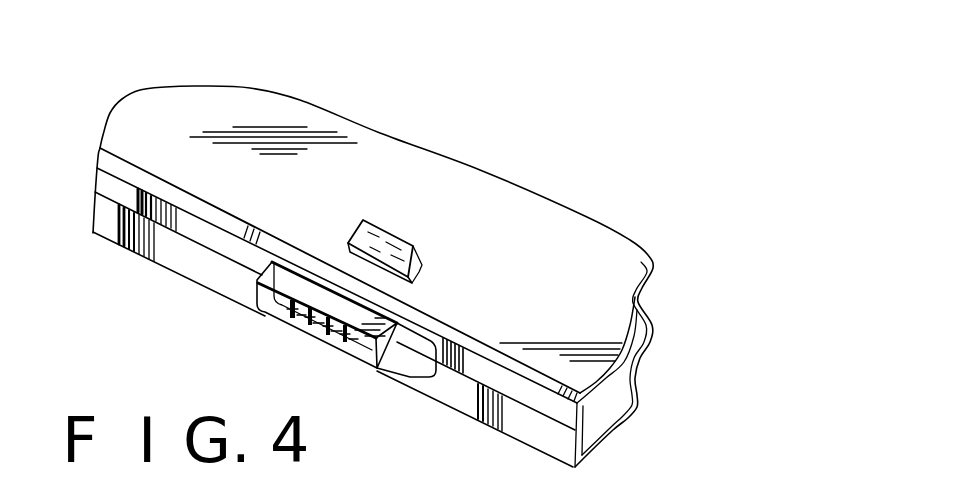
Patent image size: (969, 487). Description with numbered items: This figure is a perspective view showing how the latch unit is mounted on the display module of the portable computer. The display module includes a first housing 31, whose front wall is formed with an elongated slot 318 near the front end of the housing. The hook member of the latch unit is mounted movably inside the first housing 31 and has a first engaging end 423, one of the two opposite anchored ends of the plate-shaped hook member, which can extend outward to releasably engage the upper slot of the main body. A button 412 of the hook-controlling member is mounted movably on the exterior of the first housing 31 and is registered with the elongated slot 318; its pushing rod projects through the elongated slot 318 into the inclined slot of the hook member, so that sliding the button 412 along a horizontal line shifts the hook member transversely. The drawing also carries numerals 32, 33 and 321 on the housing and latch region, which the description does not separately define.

The first housing 31 is at (607, 440).
The top plate / cover 32 is at (587, 233).
The heat dissipating slots 33 is at (502, 405).
The elongated slot 318 is at (418, 353).
The connector slot / opening 321 is at (403, 278).
The button 412 is at (341, 363).
The first engaging end 423 is at (380, 228).